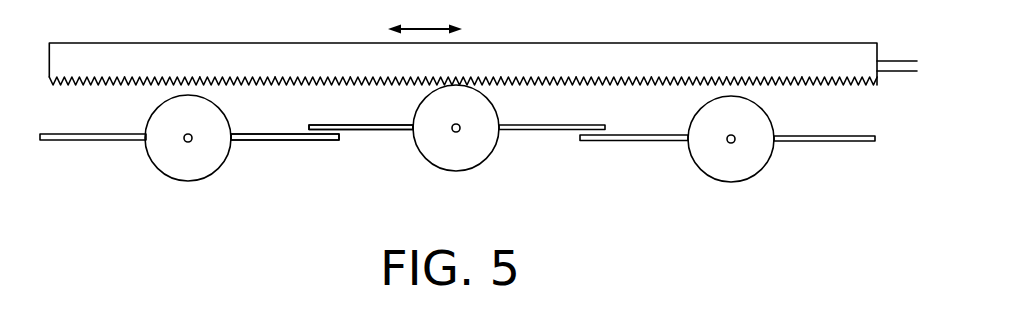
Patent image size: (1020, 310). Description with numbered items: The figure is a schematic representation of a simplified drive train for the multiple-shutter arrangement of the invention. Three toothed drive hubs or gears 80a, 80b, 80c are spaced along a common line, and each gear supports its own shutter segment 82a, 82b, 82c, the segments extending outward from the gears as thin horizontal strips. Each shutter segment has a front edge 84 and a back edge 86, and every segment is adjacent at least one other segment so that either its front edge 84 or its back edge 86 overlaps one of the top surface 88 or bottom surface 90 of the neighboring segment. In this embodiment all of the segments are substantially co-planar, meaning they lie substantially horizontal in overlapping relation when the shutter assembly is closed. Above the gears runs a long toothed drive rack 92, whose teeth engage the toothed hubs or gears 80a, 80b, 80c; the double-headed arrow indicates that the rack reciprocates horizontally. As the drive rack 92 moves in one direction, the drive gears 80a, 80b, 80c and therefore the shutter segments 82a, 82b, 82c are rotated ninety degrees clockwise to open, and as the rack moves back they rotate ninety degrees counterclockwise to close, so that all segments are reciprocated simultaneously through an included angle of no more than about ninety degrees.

The toothed drive rack 92 is at (724, 43).
The top surface 88 is at (258, 133).
The front edge 84 is at (326, 125).
The back edge 86 is at (586, 125).
The bottom surface 90 is at (278, 141).
The drive hub or gear 80a is at (191, 181).
The drive hub or gear 80b is at (477, 169).
The drive hub or gear 80c is at (733, 182).
The shutter segment 82a is at (77, 141).
The shutter segment 82b is at (367, 130).
The shutter segment 82c is at (617, 141).